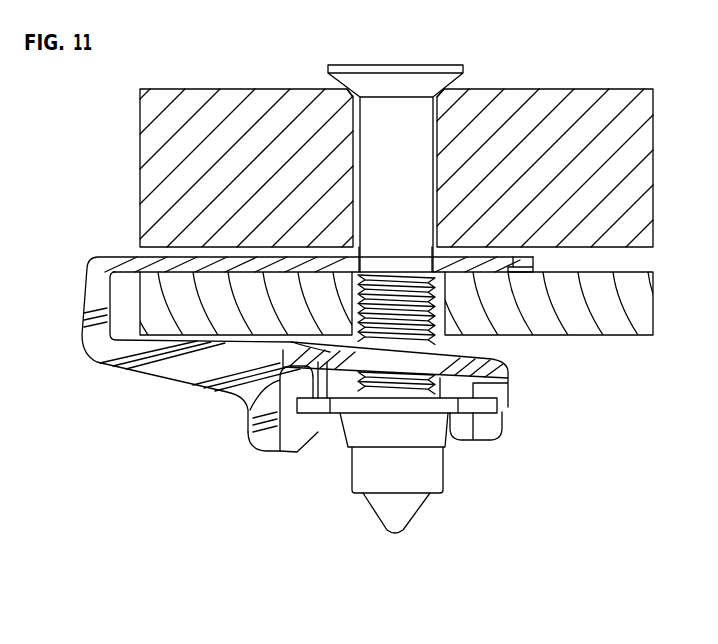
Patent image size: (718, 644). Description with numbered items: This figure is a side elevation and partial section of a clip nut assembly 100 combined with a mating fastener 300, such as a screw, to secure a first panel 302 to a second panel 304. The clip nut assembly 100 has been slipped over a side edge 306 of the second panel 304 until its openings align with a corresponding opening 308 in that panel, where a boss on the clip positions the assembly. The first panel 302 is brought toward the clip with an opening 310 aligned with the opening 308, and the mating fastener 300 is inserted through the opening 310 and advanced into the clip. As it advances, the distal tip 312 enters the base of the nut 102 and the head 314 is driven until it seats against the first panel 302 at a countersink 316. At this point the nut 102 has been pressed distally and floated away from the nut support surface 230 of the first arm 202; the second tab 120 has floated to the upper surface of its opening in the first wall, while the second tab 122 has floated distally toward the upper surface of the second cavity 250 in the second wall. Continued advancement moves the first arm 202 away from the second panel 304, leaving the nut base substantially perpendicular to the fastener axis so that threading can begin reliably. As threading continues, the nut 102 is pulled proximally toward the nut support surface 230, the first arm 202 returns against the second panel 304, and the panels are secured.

The clip nut assembly 100 is at (270, 342).
The nut 102 is at (447, 470).
The second tab 120 is at (507, 407).
The second tab 122 is at (282, 452).
The first arm 202 is at (513, 374).
The nut support surface 230 is at (500, 405).
The second cavity 250 is at (250, 408).
The mating fastener 300 is at (384, 215).
The first panel 302 is at (140, 152).
The second panel 304 is at (588, 338).
The side edge 306 is at (85, 335).
The opening 308 is at (425, 352).
The opening 310 is at (563, 90).
The distal tip 312 is at (418, 528).
The head 314 is at (462, 69).
The countersink 316 is at (453, 102).